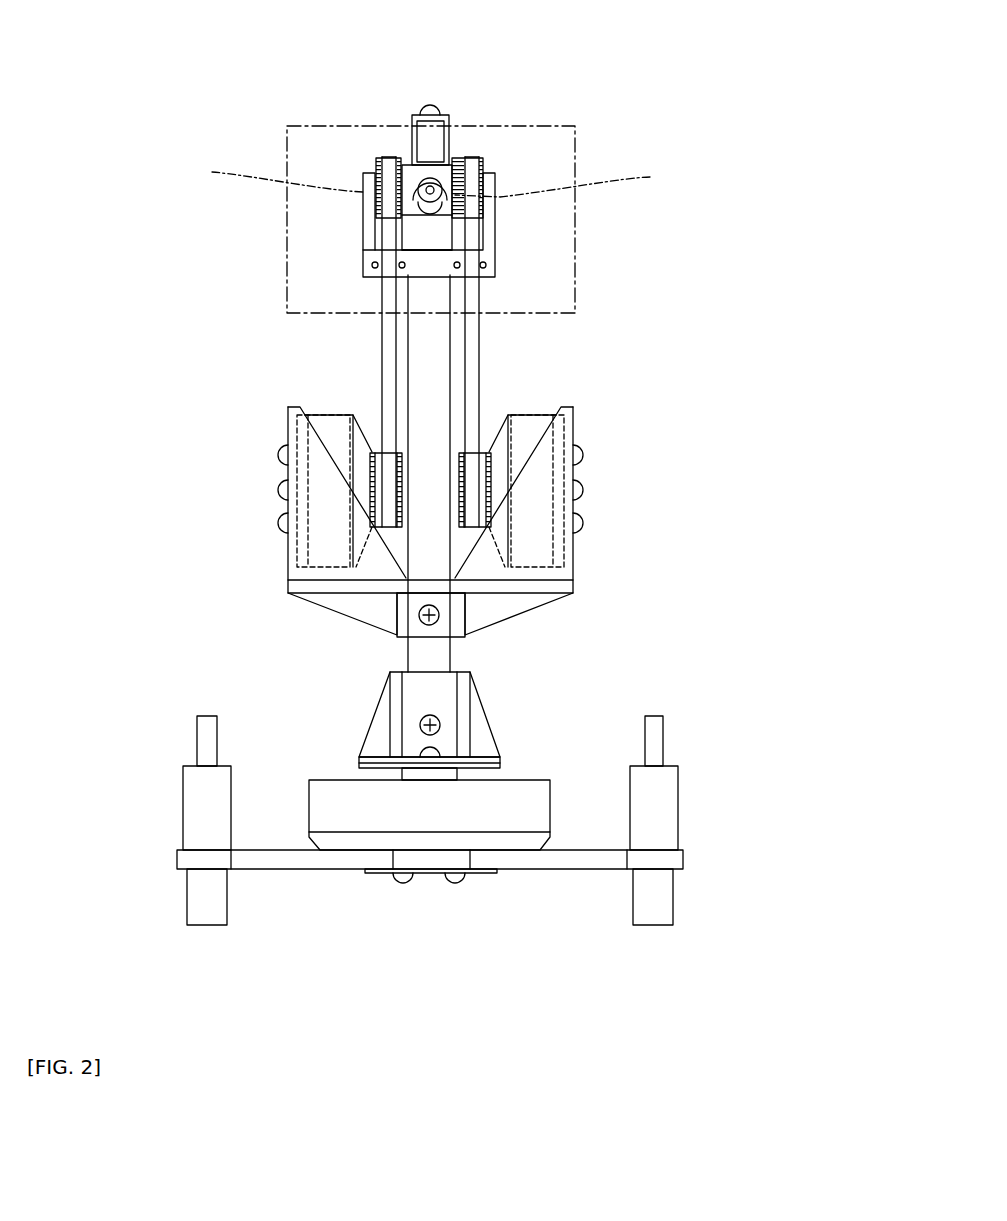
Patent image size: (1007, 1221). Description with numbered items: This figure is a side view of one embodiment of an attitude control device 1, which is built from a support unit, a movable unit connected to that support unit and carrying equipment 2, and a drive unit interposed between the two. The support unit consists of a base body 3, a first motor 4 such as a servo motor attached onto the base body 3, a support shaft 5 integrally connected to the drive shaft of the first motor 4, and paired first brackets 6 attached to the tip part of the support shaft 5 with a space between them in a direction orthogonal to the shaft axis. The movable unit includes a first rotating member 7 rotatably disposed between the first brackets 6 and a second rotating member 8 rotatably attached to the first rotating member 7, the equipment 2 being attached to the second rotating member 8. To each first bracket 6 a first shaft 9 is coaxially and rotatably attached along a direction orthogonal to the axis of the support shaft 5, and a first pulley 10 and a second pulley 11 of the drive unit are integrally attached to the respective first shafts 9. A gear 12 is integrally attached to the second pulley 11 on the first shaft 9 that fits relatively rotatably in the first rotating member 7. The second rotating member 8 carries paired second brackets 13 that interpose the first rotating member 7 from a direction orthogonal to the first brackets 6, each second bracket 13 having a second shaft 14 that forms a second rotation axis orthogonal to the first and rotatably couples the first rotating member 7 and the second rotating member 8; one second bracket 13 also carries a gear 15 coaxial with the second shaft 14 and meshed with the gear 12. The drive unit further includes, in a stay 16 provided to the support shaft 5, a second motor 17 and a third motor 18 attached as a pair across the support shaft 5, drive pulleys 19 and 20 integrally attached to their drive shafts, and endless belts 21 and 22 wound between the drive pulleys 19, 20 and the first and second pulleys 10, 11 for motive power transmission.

The attitude control device 1 is at (592, 472).
The equipment 2 is at (567, 127).
The base body 3 is at (593, 857).
The first motor 4 is at (520, 792).
The support shaft 5 is at (432, 363).
The first brackets 6 is at (363, 215).
The first rotating member 7 is at (407, 165).
The second rotating member 8 is at (443, 117).
The first shaft 9 is at (430, 180).
The first pulley 10 is at (378, 160).
The second pulley 11 is at (483, 167).
The gear 12 is at (447, 228).
The second brackets 13 is at (450, 152).
The second shaft 14 is at (425, 215).
The gear 15 is at (372, 272).
The stay 16 is at (572, 572).
The second motor 17 is at (330, 435).
The third motor 18 is at (518, 455).
The drive pulley 19 is at (403, 450).
The drive pulley 20 is at (458, 450).
The endless belt 21 is at (388, 293).
The endless belt 22 is at (470, 295).